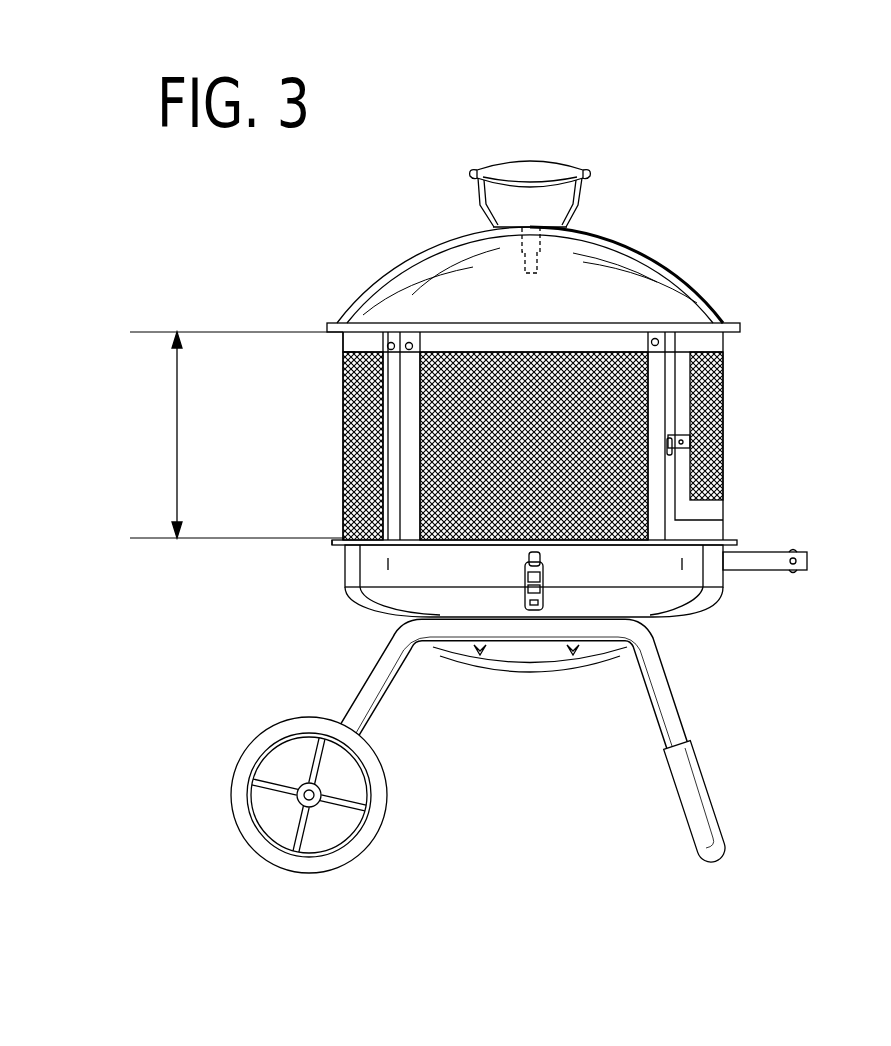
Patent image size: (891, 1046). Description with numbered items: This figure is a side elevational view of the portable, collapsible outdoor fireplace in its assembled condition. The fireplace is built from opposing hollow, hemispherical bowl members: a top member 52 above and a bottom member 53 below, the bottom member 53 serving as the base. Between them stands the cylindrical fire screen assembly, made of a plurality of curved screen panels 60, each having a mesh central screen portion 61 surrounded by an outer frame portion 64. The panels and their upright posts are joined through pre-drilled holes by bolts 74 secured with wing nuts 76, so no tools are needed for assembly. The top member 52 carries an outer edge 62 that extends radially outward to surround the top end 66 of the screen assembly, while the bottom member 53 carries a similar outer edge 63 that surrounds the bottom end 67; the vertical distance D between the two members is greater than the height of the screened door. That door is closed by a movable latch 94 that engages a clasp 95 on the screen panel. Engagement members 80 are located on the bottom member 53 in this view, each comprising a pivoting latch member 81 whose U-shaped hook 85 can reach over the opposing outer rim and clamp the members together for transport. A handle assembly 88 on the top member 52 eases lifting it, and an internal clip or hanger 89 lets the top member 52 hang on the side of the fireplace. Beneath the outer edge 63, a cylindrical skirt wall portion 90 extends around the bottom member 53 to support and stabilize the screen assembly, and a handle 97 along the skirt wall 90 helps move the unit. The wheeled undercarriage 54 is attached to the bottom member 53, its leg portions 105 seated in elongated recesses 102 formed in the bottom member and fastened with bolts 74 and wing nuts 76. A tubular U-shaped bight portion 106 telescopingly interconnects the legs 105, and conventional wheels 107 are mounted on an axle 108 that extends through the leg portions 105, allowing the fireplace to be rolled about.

The top member 52 is at (665, 258).
The bottom member 53 is at (704, 612).
The wheeled undercarriage 54 is at (690, 805).
The screen panels 60 is at (343, 353).
The central screen portion 61 is at (355, 463).
The top member outer edge 62 is at (739, 322).
The bottom member outer edge 63 is at (736, 540).
The outer frame portion 64 is at (410, 417).
The top end of fire screen assembly 66 is at (343, 347).
The bottom end of fire screen assembly 67 is at (333, 539).
The bolts 74 is at (392, 342).
The wing nuts 76 is at (575, 660).
The engagement members 80 is at (548, 567).
The latch members 81 is at (528, 562).
The U-shaped hooks 85 is at (543, 601).
The handle assembly 88 is at (584, 172).
The internal clip or hanger 89 is at (545, 252).
The skirt wall portion 90 is at (347, 576).
The movable latch 94 is at (690, 441).
The clasp 95 is at (668, 433).
The handle 97 is at (810, 561).
The elongated recesses 102 is at (658, 637).
The leg portions 105 is at (372, 702).
The tubular U-shaped bight portion 106 is at (700, 808).
The wheels 107 is at (382, 781).
The axle 108 is at (311, 806).
The distance between top and bottom members D is at (177, 432).